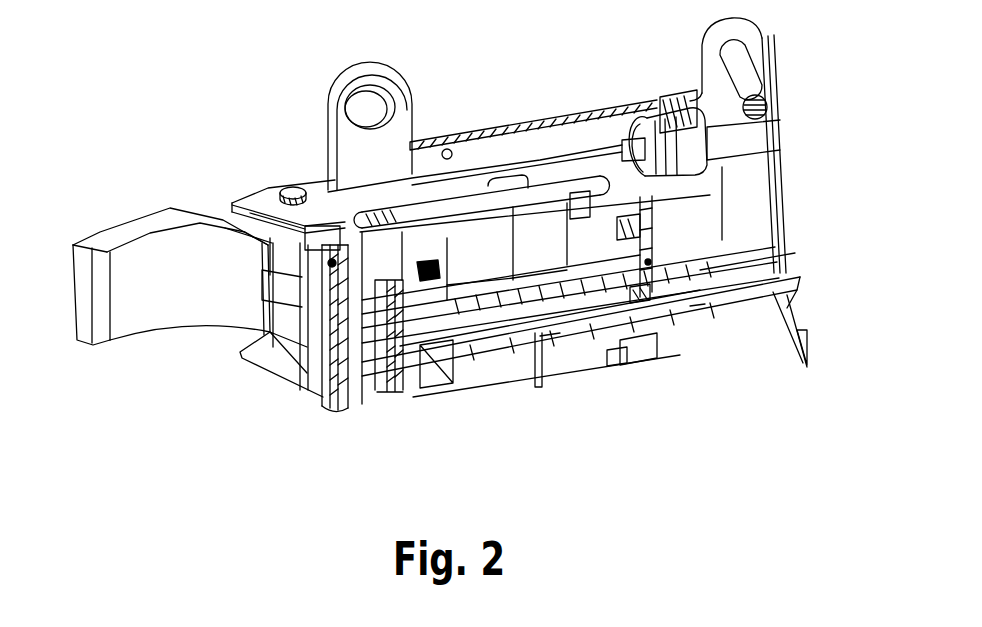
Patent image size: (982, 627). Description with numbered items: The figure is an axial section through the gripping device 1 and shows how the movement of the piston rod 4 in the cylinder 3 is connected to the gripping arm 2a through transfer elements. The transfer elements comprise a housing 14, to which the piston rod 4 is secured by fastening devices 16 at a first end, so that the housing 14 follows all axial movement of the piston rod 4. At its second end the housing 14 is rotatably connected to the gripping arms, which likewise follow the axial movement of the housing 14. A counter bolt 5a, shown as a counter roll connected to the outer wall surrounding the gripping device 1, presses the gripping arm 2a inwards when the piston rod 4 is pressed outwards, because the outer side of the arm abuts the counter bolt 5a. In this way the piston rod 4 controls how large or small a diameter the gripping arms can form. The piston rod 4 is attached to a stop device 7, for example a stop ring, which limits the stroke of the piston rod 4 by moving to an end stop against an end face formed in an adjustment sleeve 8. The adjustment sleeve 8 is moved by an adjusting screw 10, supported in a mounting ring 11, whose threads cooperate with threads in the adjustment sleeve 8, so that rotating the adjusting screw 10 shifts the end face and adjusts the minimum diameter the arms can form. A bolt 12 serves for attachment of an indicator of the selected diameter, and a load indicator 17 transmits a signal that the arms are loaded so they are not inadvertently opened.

The gripping device 1 is at (455, 262).
The gripping arm 2a is at (130, 228).
The cylinder 3 is at (460, 316).
The piston rod 4 is at (513, 297).
The counter bolt 5a is at (292, 188).
The stop device 7 is at (636, 295).
The adjustment sleeve 8 is at (697, 310).
The adjusting screw 10 is at (800, 287).
The mounting ring 11 is at (398, 335).
The bolt 12 is at (553, 335).
The housing 14 is at (513, 205).
The fastening devices 16 is at (648, 262).
The load indicator 17 is at (323, 411).